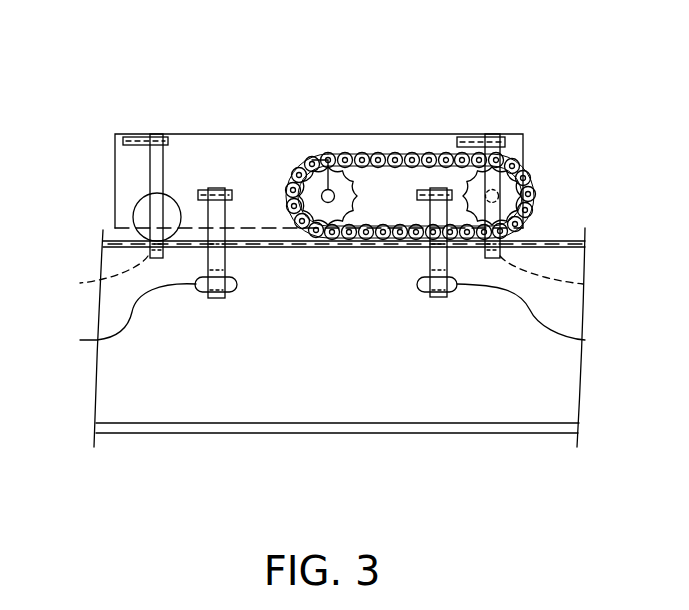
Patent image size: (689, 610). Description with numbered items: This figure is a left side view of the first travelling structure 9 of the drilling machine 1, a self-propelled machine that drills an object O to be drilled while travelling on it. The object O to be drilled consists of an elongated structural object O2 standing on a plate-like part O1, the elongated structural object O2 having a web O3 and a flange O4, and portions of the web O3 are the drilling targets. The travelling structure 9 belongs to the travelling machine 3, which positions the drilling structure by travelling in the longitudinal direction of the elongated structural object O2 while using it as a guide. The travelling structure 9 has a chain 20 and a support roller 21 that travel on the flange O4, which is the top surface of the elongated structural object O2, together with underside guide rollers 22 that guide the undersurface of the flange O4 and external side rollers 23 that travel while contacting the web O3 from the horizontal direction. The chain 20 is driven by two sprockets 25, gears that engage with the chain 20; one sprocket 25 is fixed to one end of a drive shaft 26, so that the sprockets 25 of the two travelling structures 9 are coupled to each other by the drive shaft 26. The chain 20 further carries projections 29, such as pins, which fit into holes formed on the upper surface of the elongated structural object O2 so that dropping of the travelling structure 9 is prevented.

The drilling machine 1 is at (133, 79).
The travelling machine 3 is at (458, 123).
The travelling structure 9 is at (527, 162).
The chain 20 is at (343, 152).
The support roller 21 is at (133, 212).
The underside guide roller 22 is at (80, 284).
The external side roller 23 is at (80, 340).
The sprocket 25 is at (446, 152).
The drive shaft 26 is at (308, 158).
The projection 29 is at (287, 184).
The object to be drilled O is at (226, 436).
The plate-like part O1 is at (336, 435).
The elongated structural object O2 is at (566, 241).
The web O3 is at (535, 383).
The flange O4 is at (529, 241).